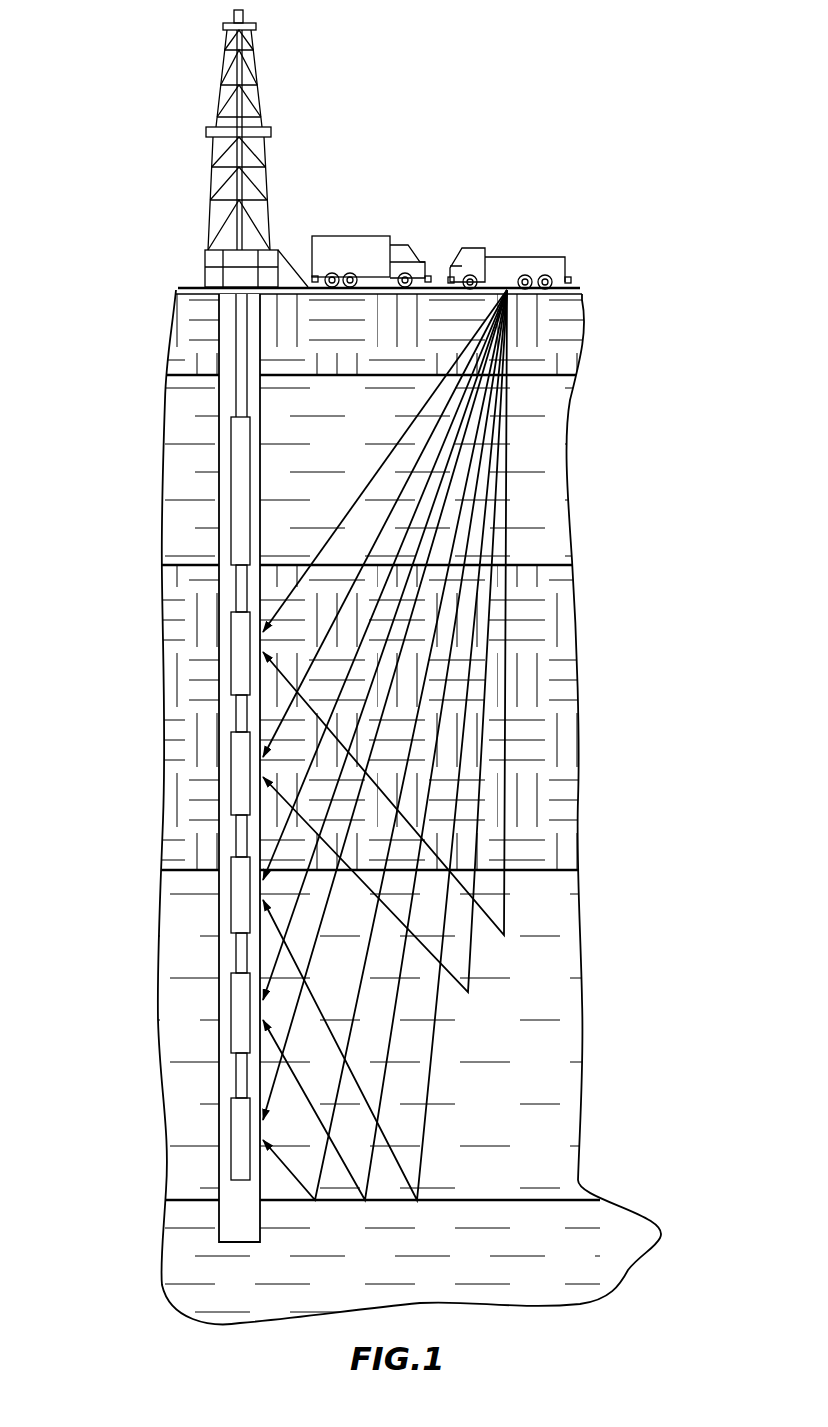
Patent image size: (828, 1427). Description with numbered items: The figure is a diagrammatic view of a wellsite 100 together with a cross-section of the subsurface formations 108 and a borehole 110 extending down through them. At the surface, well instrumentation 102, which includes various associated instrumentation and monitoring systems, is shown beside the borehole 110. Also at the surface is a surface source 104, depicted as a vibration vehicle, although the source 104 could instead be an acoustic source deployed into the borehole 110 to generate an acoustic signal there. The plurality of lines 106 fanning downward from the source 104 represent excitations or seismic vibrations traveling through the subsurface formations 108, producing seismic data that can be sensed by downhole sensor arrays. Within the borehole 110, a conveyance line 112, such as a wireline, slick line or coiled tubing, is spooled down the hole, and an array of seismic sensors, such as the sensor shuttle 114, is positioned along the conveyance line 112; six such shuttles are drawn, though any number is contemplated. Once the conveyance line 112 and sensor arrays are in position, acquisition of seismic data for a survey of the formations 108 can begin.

The wellsite 100 is at (527, 140).
The well instrumentation 102 is at (197, 261).
The surface source 104 is at (560, 243).
The plurality of lines 106 is at (508, 500).
The subsurface formations 108 is at (530, 528).
The borehole 110 is at (233, 590).
The conveyance line 112 is at (240, 703).
The sensor shuttle 114 is at (233, 804).